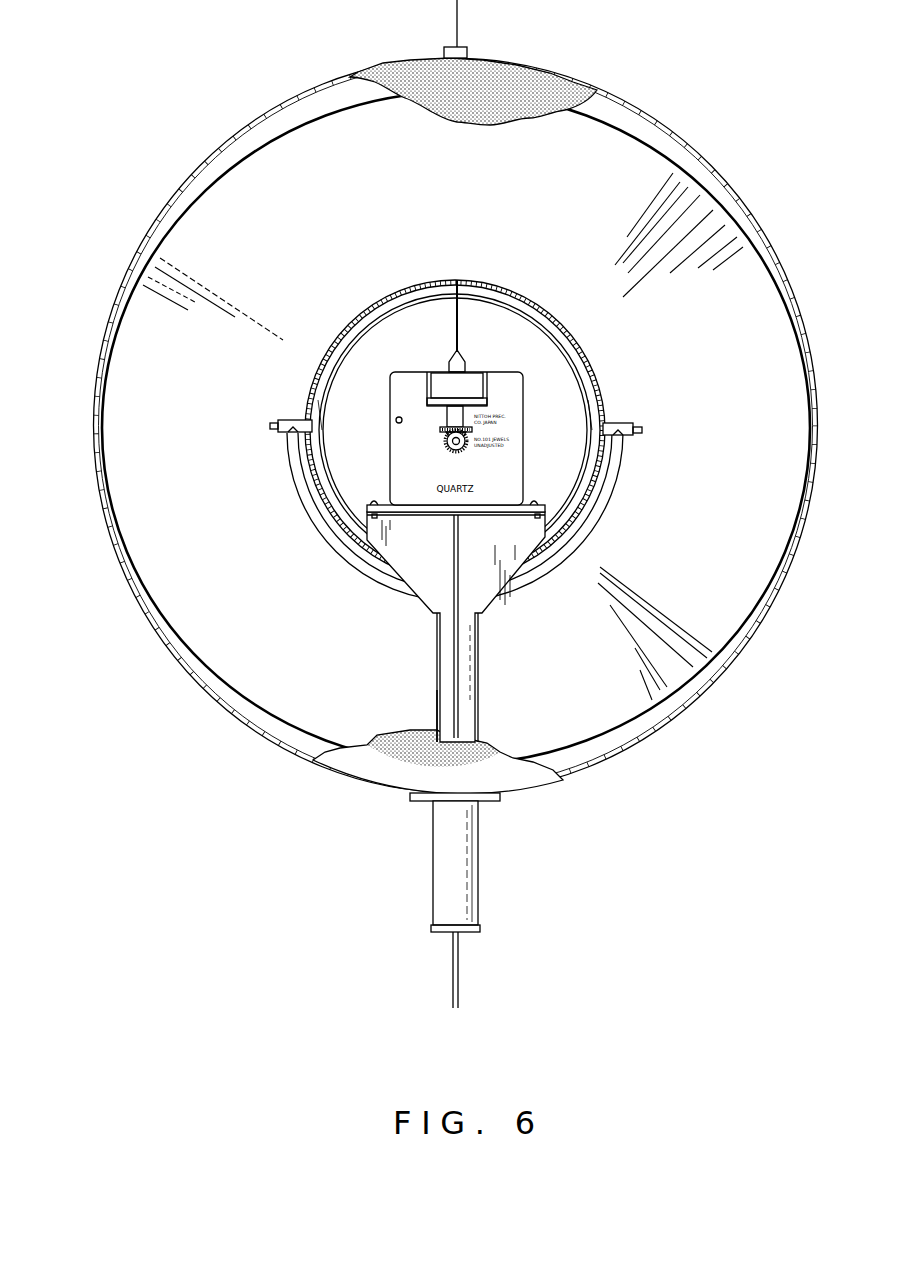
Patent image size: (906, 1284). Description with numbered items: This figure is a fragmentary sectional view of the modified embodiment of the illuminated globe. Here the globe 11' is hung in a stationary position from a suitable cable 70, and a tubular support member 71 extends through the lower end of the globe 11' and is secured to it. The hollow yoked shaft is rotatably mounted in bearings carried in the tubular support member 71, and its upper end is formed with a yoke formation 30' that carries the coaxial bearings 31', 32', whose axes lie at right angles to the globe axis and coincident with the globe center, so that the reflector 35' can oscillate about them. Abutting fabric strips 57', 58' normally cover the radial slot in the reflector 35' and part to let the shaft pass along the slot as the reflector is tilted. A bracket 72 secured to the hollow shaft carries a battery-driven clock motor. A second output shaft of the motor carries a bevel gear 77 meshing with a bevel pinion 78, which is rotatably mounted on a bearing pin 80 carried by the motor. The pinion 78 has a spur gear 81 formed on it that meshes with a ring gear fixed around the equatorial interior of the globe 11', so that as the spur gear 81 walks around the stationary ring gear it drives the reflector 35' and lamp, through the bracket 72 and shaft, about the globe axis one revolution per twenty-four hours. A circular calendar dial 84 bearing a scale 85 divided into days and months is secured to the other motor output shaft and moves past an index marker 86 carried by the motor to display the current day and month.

The cable 70 is at (458, 8).
The globe 11' is at (456, 426).
The reflector 35' is at (470, 428).
The circular calendar dial 84 is at (507, 287).
The scale 85 is at (583, 353).
The index marker 86 is at (454, 323).
The bearing pin 80 is at (447, 413).
The spur gear 81 is at (440, 429).
The bevel pinion 78 is at (445, 433).
The bevel gear 77 is at (466, 447).
The bearing 31' is at (279, 404).
The bearing 32' is at (643, 409).
The yoke formation 30' is at (493, 517).
The bracket 72 is at (480, 655).
The fabric strip 57' is at (408, 716).
The fabric strip 58' is at (495, 626).
The tubular support member 71 is at (478, 893).